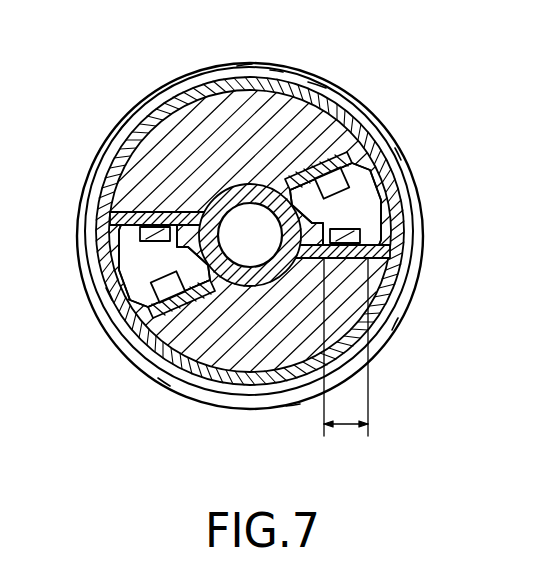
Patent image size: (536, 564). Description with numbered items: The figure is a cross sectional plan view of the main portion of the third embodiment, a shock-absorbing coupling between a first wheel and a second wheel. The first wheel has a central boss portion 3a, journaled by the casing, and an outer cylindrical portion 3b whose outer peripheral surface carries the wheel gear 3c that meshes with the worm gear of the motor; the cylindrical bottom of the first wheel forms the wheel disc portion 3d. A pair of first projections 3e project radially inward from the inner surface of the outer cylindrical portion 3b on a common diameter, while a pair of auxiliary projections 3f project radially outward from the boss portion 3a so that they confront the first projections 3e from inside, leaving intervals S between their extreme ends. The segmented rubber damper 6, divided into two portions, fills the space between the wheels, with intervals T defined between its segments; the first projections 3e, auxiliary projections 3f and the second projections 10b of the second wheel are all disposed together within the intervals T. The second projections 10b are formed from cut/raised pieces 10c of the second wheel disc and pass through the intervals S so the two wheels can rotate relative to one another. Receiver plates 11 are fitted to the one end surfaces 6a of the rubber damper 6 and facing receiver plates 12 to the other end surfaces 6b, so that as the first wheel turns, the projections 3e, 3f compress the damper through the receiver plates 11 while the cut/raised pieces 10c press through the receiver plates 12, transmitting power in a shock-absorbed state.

The boss portion 3a is at (252, 158).
The outer cylindrical portion 3b is at (207, 95).
The wheel gear 3c is at (403, 320).
The wheel disc portion 3d is at (145, 314).
The first projections 3e is at (395, 249).
The auxiliary projections 3f is at (323, 152).
The rubber damper 6 is at (232, 362).
The one end surfaces 6a is at (400, 280).
The other end surfaces 6b is at (338, 165).
The second projections 10b is at (380, 187).
The cut/raised pieces 10c is at (124, 266).
The receiver plates 11 is at (392, 252).
The receiver plates 12 is at (152, 312).
The intervals T is at (380, 207).
The intervals S is at (348, 427).